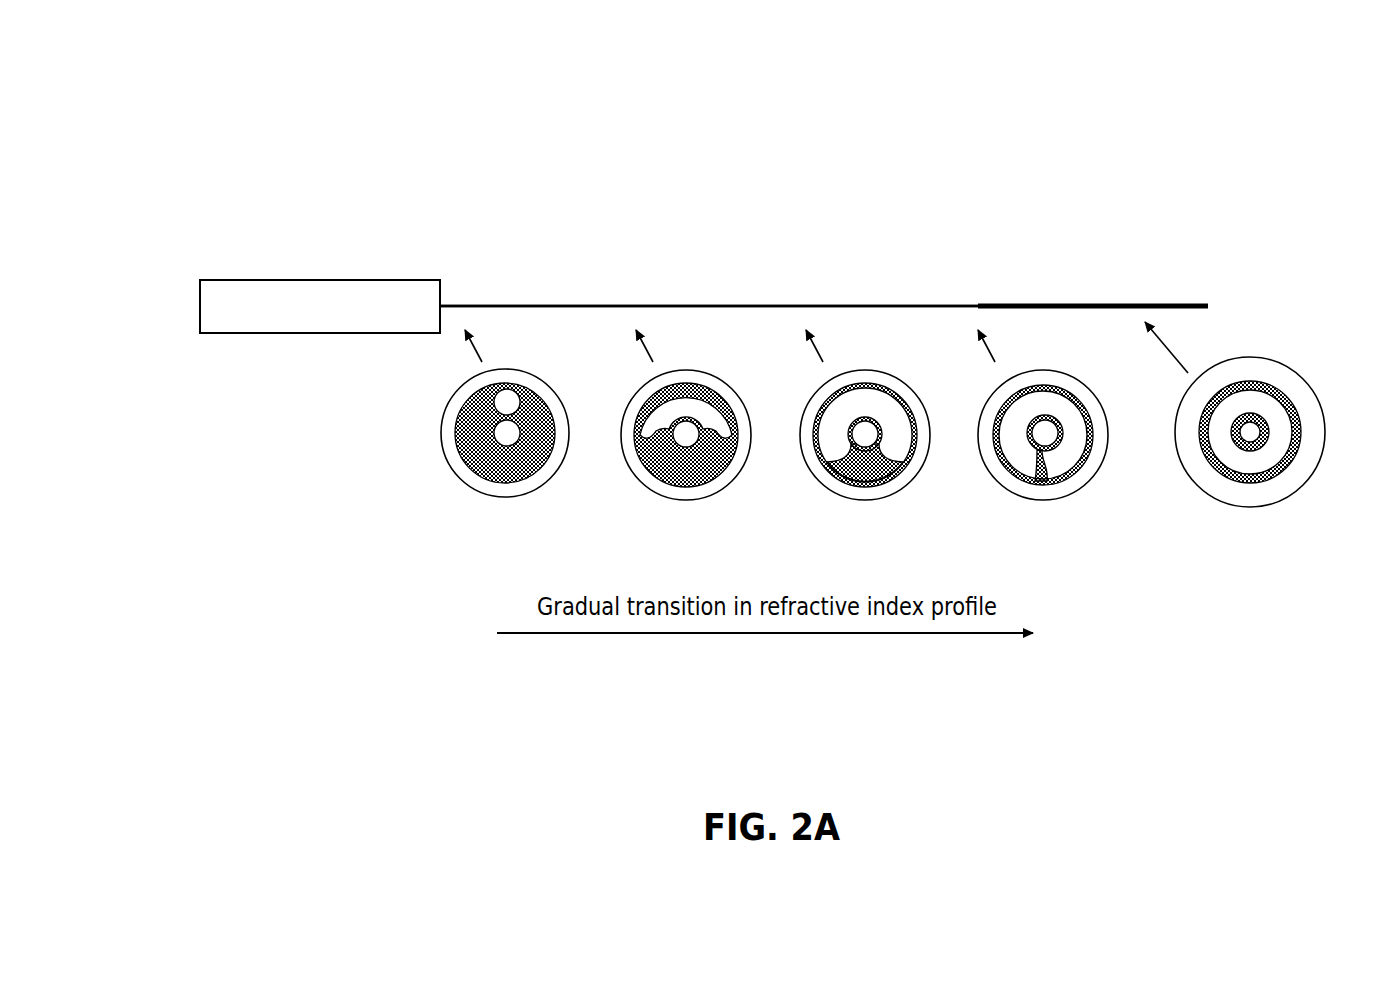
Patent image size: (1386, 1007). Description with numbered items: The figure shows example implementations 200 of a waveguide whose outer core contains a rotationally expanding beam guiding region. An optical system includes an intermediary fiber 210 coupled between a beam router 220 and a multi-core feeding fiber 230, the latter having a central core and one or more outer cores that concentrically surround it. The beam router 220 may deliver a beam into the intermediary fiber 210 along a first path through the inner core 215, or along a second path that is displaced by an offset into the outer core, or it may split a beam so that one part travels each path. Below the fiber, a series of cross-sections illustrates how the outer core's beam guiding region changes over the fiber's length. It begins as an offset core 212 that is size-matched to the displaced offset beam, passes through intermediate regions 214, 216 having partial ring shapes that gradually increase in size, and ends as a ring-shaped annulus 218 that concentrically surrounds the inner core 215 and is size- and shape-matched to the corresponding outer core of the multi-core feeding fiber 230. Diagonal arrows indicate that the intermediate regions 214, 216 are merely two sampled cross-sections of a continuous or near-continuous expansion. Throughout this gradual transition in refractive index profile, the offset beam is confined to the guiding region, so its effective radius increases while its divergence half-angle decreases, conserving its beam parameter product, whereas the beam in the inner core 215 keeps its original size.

The example implementations 200 is at (280, 82).
The intermediary fiber 210 is at (733, 305).
The offset core 212 is at (508, 400).
The intermediate region 214 is at (685, 400).
The inner core 215 is at (508, 442).
The intermediate region 216 is at (866, 400).
The ring-shaped annulus 218 is at (1043, 400).
The beam router 220 is at (320, 280).
The multi-core feeding fiber 230 is at (1092, 305).